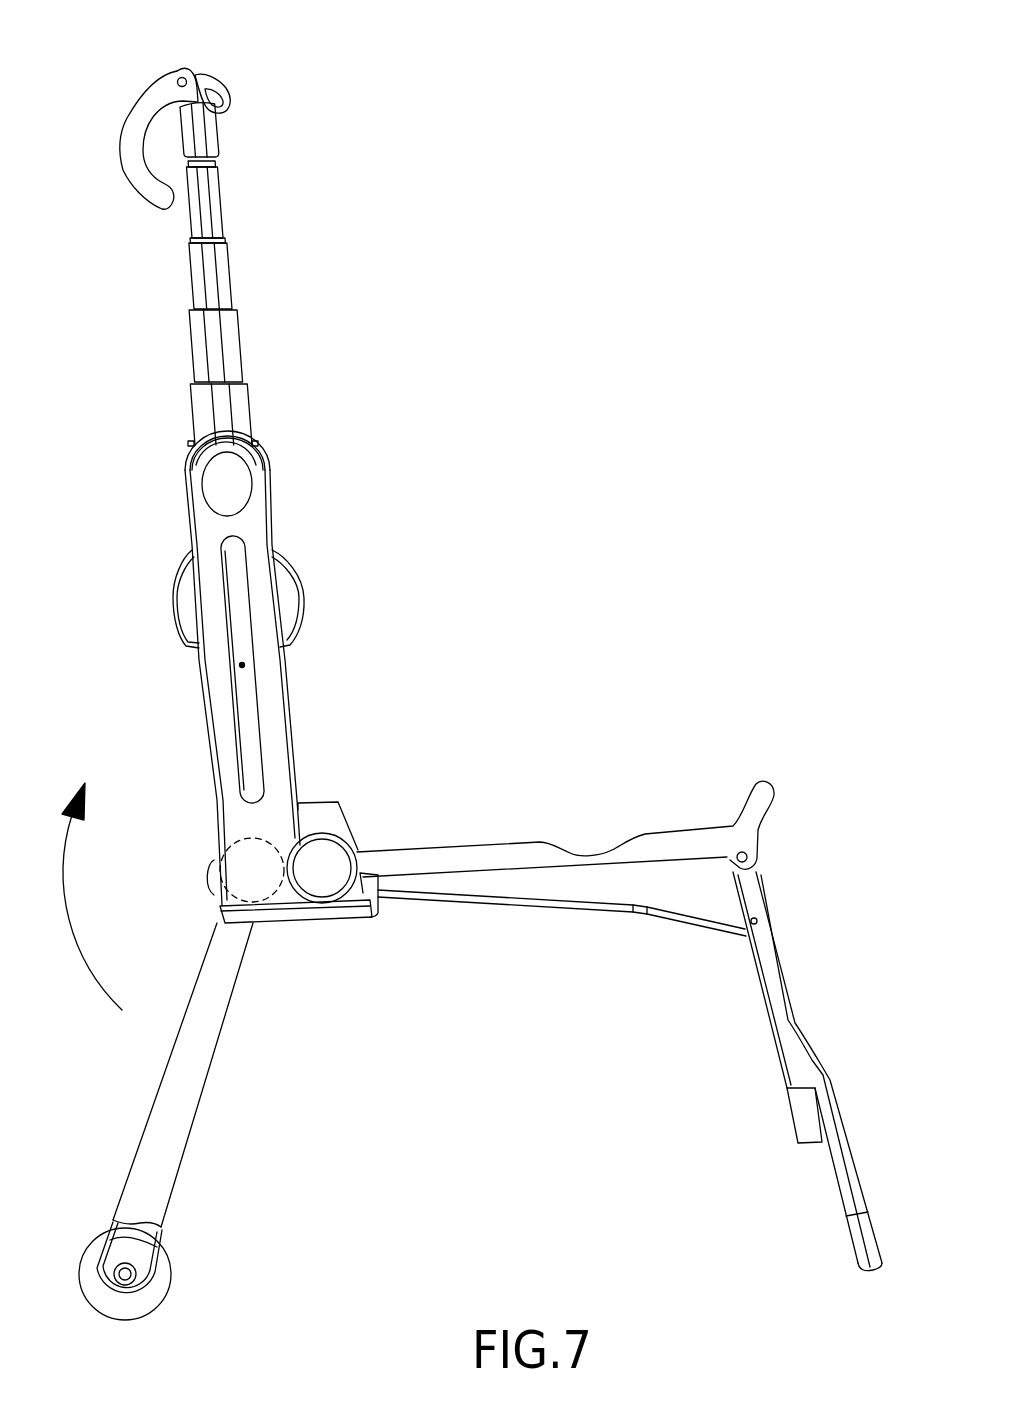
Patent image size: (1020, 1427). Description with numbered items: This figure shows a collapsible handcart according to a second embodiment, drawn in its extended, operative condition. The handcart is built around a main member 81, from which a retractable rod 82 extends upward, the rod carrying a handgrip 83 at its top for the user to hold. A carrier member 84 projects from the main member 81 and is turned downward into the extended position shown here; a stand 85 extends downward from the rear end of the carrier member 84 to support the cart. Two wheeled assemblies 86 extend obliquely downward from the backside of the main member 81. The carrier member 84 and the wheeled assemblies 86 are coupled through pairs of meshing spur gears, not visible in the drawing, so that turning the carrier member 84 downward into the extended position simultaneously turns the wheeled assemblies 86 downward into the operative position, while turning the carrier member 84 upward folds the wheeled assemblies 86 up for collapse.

The main member 81 is at (272, 513).
The retractable rod 82 is at (233, 280).
The handgrip 83 is at (132, 107).
The carrier member 84 is at (500, 843).
The stand 85 is at (789, 984).
The wheeled assemblies 86 is at (223, 1064).